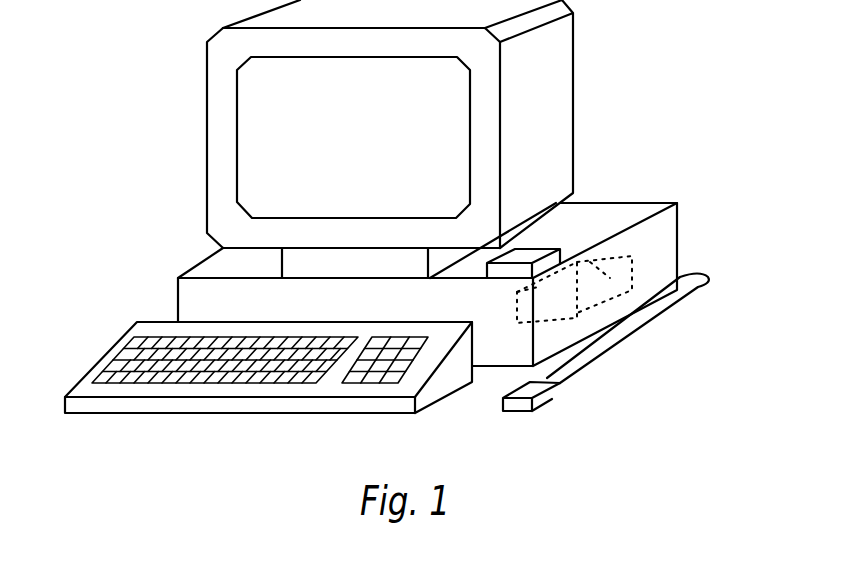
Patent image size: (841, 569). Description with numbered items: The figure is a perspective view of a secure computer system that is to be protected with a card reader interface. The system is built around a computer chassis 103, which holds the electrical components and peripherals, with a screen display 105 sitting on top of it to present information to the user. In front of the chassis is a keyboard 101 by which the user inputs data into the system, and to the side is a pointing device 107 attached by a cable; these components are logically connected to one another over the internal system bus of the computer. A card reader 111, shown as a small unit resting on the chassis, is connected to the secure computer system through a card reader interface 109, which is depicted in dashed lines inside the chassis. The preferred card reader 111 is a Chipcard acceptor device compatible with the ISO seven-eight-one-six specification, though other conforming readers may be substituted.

The keyboard 101 is at (92, 372).
The computer chassis 103 is at (178, 294).
The screen display 105 is at (207, 147).
The pointing device 107 is at (561, 396).
The card reader interface 109 is at (672, 205).
The card reader 111 is at (544, 250).